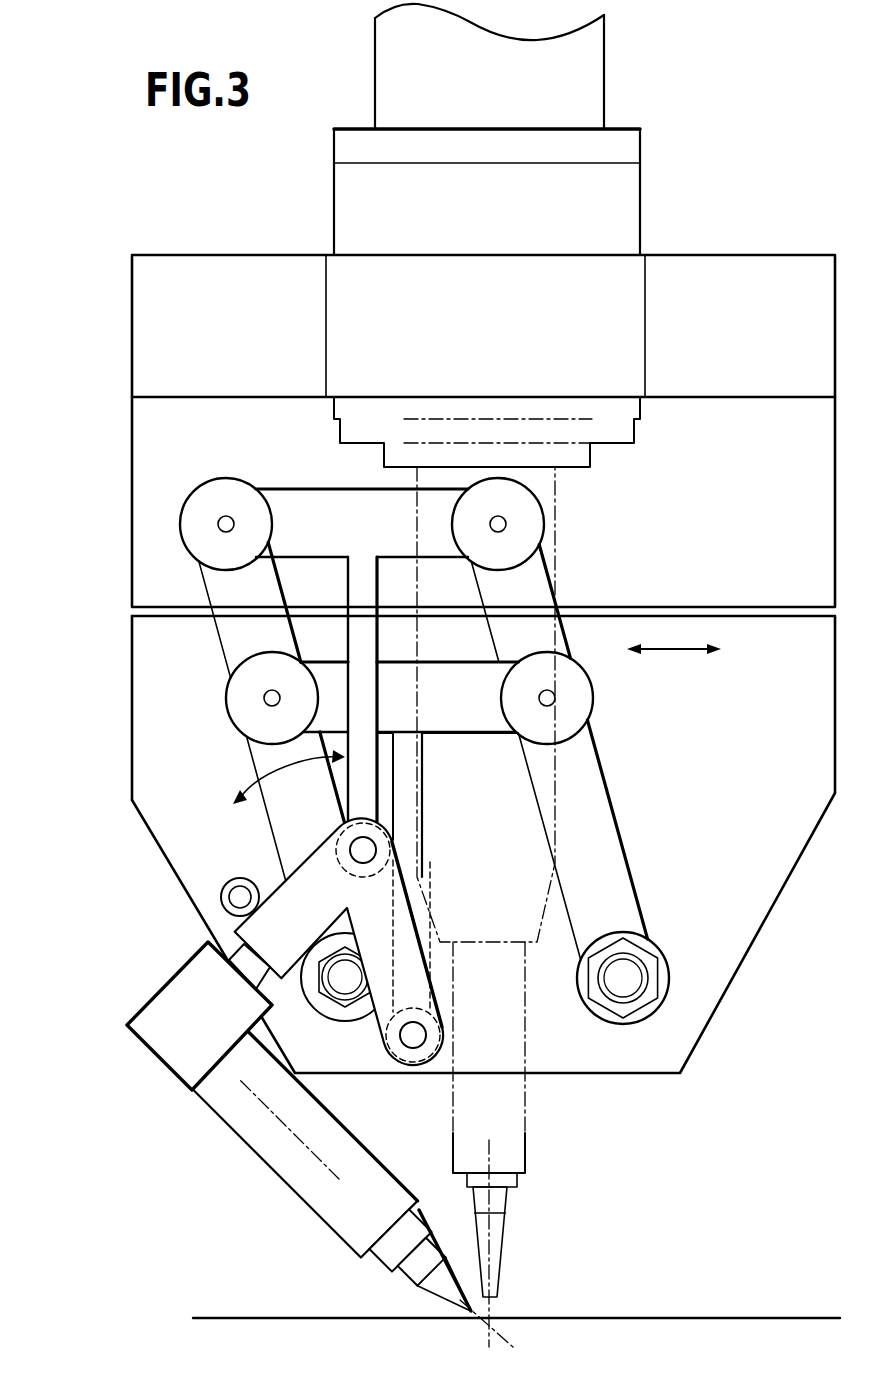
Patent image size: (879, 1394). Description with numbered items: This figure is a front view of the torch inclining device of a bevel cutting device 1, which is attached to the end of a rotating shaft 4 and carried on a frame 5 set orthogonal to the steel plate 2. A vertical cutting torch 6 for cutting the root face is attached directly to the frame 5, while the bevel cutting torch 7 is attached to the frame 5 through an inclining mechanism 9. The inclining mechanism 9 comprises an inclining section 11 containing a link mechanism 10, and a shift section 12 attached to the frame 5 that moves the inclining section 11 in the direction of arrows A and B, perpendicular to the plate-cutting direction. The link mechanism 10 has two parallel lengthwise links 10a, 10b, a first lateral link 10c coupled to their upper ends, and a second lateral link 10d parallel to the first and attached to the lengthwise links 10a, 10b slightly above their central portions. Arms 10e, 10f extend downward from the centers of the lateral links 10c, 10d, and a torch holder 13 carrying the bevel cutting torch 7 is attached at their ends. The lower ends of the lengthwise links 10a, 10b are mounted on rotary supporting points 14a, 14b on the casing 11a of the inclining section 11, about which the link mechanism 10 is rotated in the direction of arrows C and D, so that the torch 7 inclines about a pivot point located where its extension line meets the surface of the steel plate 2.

The bevel cutting device 1 is at (118, 316).
The steel plate 2 is at (650, 1318).
The shaft 4 is at (600, 70).
The frame 5 is at (220, 272).
The vertical cutting torch 6 is at (500, 1238).
The bevel cutting torch 7 is at (307, 1172).
The inclining mechanism 9 is at (113, 700).
The link mechanism 10 is at (612, 740).
The lengthwise link 10a is at (233, 641).
The lengthwise link 10b is at (613, 842).
The first lateral link 10c is at (293, 497).
The second lateral link 10d is at (325, 655).
The arm 10e is at (362, 618).
The arm 10f is at (424, 780).
The inclining section 11 is at (148, 820).
The casing 11a is at (140, 757).
The shift section 12 is at (137, 548).
The torch holder 13 is at (282, 893).
The rotary supporting point 14a is at (347, 987).
The rotary supporting point 14b is at (628, 983).